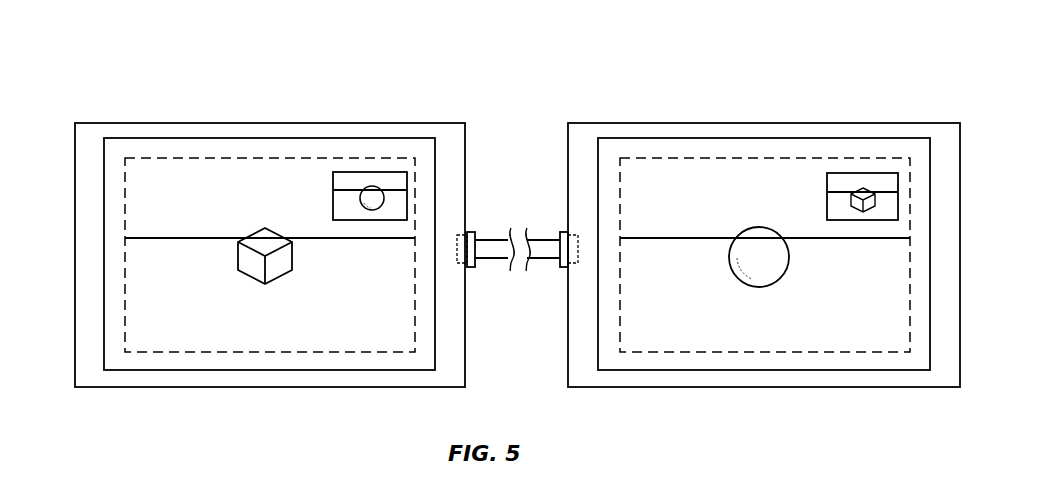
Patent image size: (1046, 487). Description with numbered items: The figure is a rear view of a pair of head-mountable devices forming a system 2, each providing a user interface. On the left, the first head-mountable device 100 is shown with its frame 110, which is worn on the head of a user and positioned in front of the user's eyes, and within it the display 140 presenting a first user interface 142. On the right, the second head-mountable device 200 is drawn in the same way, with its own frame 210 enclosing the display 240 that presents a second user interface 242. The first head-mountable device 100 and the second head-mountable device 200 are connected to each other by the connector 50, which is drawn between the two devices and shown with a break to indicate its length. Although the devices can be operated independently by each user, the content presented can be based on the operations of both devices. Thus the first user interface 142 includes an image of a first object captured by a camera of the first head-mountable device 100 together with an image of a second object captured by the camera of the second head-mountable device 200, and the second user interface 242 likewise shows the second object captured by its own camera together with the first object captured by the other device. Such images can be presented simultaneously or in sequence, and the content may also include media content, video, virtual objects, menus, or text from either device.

The system 2 is at (240, 74).
The first head-mountable device 100 is at (55, 105).
The frame 110 is at (100, 123).
The display 140 is at (315, 137).
The first user interface 142 is at (362, 157).
The connector 50 is at (497, 239).
The second head-mountable device 200 is at (546, 105).
The housing of second device 210 is at (595, 123).
The display 240 is at (810, 137).
The second user interface 242 is at (855, 157).